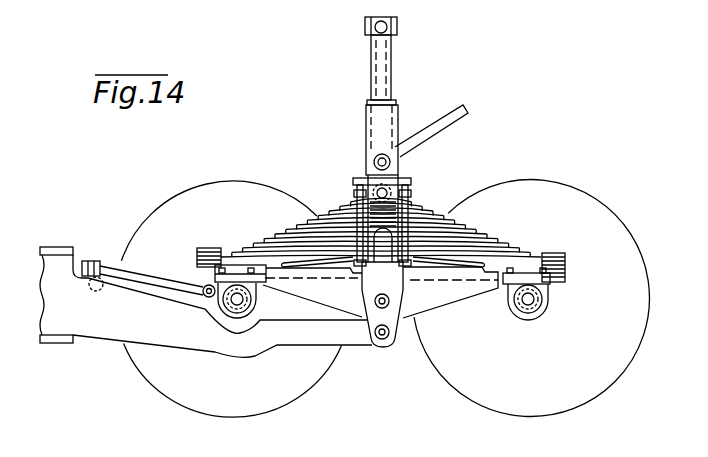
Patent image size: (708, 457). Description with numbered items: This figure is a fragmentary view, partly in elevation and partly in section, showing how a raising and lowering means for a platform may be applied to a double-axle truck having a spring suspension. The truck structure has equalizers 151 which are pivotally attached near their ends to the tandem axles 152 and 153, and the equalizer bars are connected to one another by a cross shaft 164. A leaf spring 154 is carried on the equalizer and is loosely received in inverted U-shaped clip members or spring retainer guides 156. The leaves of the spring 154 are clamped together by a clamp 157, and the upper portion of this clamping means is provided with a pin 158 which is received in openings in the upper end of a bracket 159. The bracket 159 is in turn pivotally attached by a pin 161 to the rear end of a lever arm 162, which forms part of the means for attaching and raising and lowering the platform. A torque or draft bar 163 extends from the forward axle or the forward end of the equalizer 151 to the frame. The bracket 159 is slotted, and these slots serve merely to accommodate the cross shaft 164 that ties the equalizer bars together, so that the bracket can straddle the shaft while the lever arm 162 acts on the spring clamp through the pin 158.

The equalizer 151 is at (460, 295).
The tandem axle 152 is at (533, 303).
The tandem axle 153 is at (245, 292).
The leaf spring 154 is at (447, 205).
The spring retainer guide 156 is at (565, 253).
The clamp 157 is at (418, 195).
The pin 158 is at (360, 178).
The bracket 159 is at (350, 202).
The pin 161 is at (383, 338).
The lever arm 162 is at (162, 335).
The torque or draft bar 163 is at (150, 272).
The cross shaft 164 is at (390, 303).